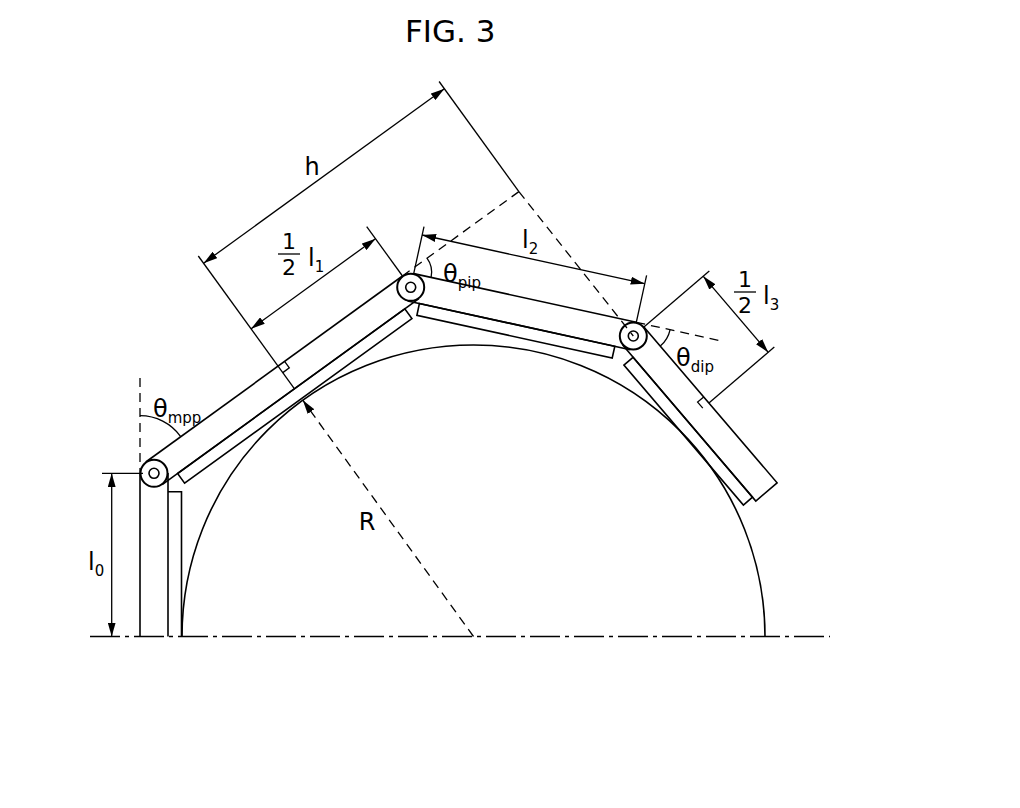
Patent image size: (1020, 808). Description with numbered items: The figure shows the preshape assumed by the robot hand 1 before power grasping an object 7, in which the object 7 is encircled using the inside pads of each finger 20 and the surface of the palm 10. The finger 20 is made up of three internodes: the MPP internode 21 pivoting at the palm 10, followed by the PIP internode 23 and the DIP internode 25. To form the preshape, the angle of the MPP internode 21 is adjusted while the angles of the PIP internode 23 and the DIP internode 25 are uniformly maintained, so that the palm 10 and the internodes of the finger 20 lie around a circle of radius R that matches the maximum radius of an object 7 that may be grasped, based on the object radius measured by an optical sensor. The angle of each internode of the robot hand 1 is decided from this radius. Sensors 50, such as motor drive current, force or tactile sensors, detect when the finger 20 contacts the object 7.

The robot hand 1 is at (694, 125).
The object 7 is at (746, 583).
The palm 10 is at (150, 628).
The finger 20 is at (461, 391).
The MPP internode 21 is at (327, 353).
The PIP internode 23 is at (466, 320).
The DIP internode 25 is at (658, 412).
The sensor 50 is at (178, 614).